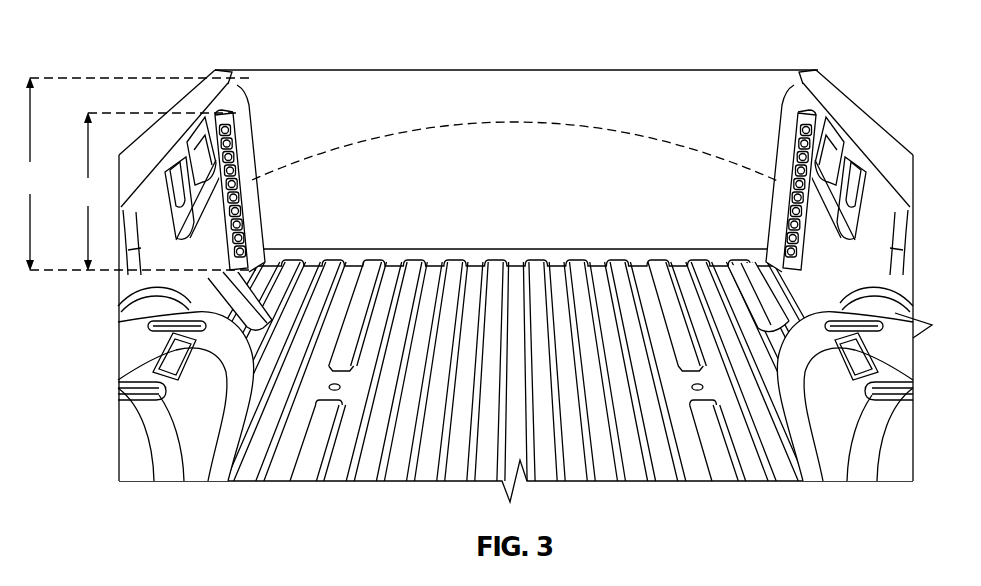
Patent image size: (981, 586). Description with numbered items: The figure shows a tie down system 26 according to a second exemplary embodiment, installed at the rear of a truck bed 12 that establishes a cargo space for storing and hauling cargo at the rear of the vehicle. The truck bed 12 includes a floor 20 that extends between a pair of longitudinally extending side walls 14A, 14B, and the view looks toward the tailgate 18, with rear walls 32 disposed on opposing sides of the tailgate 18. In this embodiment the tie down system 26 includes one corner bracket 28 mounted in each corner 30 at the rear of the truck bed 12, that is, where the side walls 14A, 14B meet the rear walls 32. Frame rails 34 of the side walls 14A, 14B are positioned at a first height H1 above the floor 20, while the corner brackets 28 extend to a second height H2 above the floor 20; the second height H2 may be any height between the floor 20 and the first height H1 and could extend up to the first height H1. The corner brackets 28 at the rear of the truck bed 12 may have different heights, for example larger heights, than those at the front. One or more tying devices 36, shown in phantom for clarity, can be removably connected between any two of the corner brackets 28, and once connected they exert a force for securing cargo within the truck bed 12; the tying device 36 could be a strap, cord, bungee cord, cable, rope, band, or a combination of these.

The truck bed 12 is at (254, 401).
The side wall 14A is at (877, 197).
The side wall 14B is at (152, 212).
The tailgate 18 is at (660, 102).
The floor 20 is at (466, 358).
The tie down system 26 is at (747, 224).
The corner bracket 28 is at (257, 276).
The corner 30 is at (234, 100).
The rear wall 32 is at (243, 146).
The frame rail 34 is at (191, 108).
The tying device 36 is at (573, 123).
The first height H1 is at (136, 174).
The second height H2 is at (154, 191).